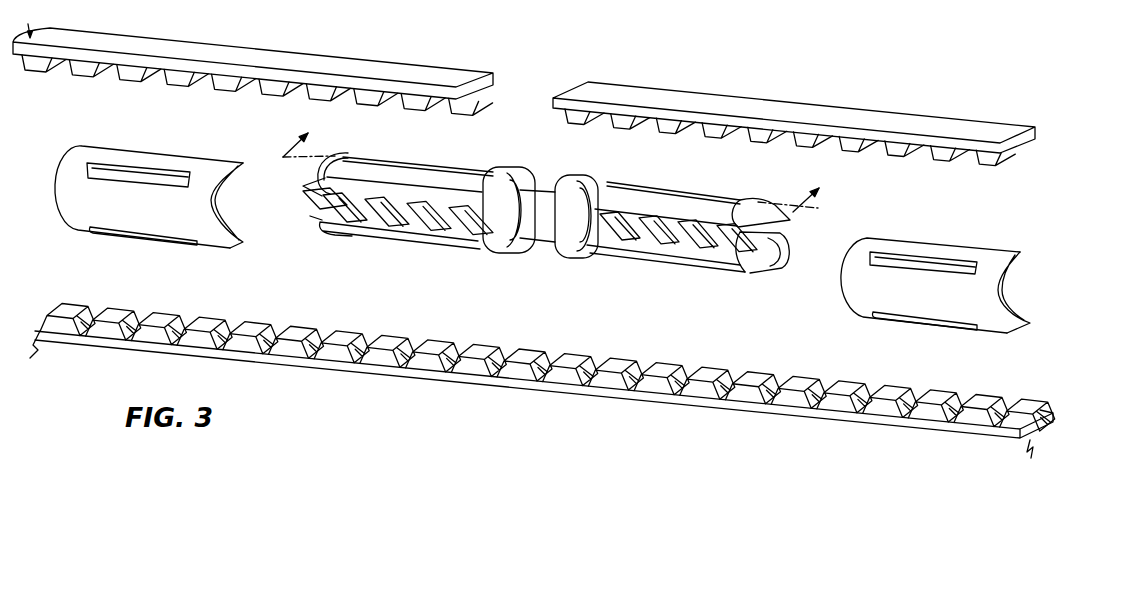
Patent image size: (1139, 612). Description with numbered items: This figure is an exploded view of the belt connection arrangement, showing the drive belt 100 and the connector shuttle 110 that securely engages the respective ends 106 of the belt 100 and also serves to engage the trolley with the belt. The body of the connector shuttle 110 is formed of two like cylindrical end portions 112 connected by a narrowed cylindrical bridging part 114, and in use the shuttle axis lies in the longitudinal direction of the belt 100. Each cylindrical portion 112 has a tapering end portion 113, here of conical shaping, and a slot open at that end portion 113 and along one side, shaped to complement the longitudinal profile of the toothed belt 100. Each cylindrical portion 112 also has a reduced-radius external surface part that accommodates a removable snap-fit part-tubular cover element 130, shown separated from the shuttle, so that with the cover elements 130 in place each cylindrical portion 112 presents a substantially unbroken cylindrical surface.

The drive belt 100 is at (253, 107).
The ends of belt 106 is at (562, 78).
The connector shuttle 110 is at (466, 262).
The cylindrical end portion 112 is at (414, 182).
The tapering end portion 113 is at (318, 176).
The bridging part 114 is at (538, 225).
The cover element 130 is at (123, 158).